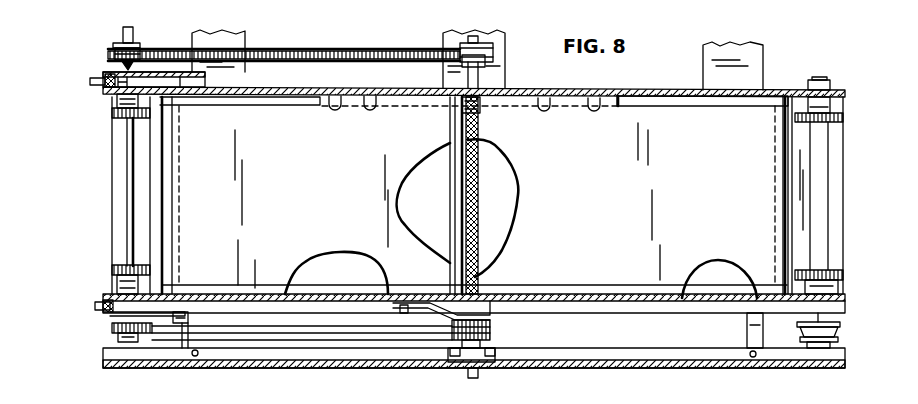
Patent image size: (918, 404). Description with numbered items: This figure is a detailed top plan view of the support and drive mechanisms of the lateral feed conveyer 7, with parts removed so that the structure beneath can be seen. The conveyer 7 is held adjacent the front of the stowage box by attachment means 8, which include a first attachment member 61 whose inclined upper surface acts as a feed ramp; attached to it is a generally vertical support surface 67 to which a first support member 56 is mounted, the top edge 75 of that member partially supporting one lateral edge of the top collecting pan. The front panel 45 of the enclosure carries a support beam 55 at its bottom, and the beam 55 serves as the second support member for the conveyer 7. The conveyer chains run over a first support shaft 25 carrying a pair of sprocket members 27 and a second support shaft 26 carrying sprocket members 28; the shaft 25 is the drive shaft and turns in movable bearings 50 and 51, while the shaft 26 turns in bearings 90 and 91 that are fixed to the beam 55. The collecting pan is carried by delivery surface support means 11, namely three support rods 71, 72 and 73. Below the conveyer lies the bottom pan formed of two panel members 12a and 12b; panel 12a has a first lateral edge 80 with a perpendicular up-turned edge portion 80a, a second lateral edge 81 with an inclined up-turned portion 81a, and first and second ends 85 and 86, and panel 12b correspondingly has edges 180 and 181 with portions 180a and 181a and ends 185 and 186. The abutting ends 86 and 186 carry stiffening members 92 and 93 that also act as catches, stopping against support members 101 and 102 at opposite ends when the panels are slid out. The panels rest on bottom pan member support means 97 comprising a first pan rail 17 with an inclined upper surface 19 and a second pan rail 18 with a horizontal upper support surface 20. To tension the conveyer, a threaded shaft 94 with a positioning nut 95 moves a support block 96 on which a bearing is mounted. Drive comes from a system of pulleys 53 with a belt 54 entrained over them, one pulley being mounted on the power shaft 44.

The lateral feed conveyer 7 is at (96, 213).
The attachment means 8 is at (768, 72).
The delivery surface support means 11 is at (176, 152).
The panel member 12a is at (628, 204).
The panel member 12b is at (352, 204).
The first pan rail 17 is at (715, 282).
The second pan rail 18 is at (563, 107).
The inclined upper surface 19 is at (728, 290).
The upper support surface 20 is at (600, 108).
The first support shaft 25 is at (127, 180).
The second support shaft 26 is at (826, 200).
The sprocket members 27 is at (112, 116).
The sprocket members 28 is at (843, 117).
The power shaft 44 is at (468, 376).
The front panel 45 is at (598, 300).
The bearing 50 is at (115, 290).
The bearing 51 is at (116, 98).
The pulleys 53 is at (492, 337).
The belt 54 is at (322, 360).
The support beam 55 is at (331, 303).
The first support member 56 is at (400, 101).
The first attachment member 61 is at (783, 88).
The vertical support surface 67 is at (618, 96).
The support rod 71 is at (171, 176).
The support rod 72 is at (450, 205).
The support rod 73 is at (784, 203).
The top edge 75 is at (326, 105).
The first lateral edge 80 is at (594, 98).
The up-turned edge portion 80a is at (548, 98).
The second lateral edge 81 is at (649, 302).
The up-turned portion 81a is at (610, 302).
The first end 85 is at (835, 170).
The second end 86 is at (457, 122).
The bearing 90 is at (843, 289).
The bearing 91 is at (843, 100).
The stiffening member 92 is at (478, 248).
The stiffening member 93 is at (85, 67).
The threaded shaft 94 is at (90, 81).
The positioning nut 95 is at (101, 71).
The support block 96 is at (152, 78).
The bottom pan member support means 97 is at (696, 288).
The support member 101 is at (775, 230).
The support member 102 is at (180, 214).
The first lateral edge 180 is at (336, 96).
The up-turned edge portion 180a is at (375, 84).
The second lateral edge 181 is at (268, 292).
The up-turned portion 181a is at (219, 292).
The first end 185 is at (113, 232).
The second end 186 is at (478, 127).